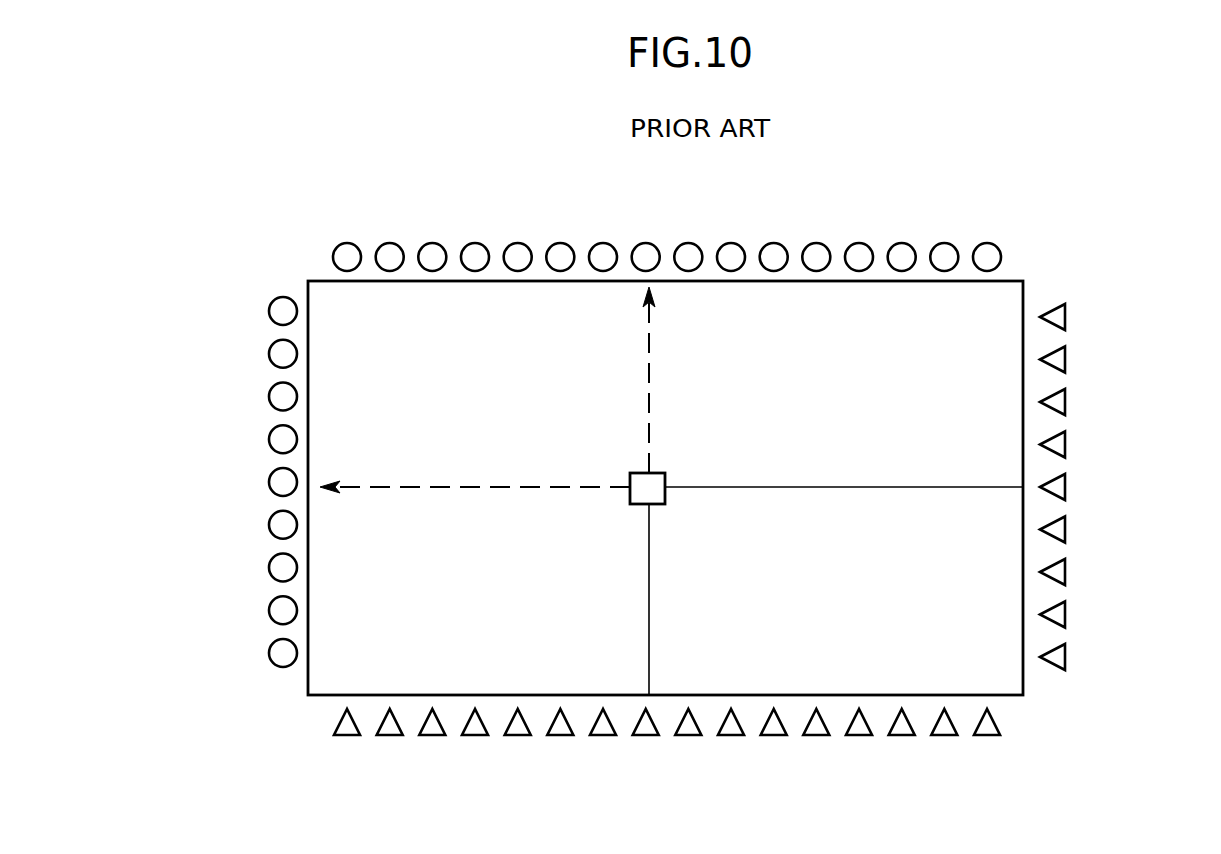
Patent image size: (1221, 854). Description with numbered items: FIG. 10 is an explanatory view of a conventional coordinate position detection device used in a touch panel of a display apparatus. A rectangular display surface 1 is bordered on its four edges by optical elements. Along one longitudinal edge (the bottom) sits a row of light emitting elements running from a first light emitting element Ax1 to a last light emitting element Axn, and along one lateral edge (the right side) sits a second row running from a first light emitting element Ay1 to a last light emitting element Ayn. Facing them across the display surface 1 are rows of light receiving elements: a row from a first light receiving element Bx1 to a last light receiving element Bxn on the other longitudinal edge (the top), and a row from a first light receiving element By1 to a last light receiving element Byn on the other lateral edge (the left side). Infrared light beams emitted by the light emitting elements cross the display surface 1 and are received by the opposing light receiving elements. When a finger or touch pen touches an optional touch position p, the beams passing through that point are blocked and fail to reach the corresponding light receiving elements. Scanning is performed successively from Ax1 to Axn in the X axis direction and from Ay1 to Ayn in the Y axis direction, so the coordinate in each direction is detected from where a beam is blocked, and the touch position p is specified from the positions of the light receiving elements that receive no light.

The display surface 1 is at (307, 292).
The light receiving element Bx1 is at (347, 247).
The light receiving element Bxn is at (987, 253).
The light receiving element By1 is at (271, 311).
The light receiving element Byn is at (278, 657).
The light emitting element Ay1 is at (1060, 317).
The light emitting element Ayn is at (1058, 657).
The light emitting element Ax1 is at (340, 734).
The light emitting element Axn is at (985, 733).
The touch position p is at (650, 484).